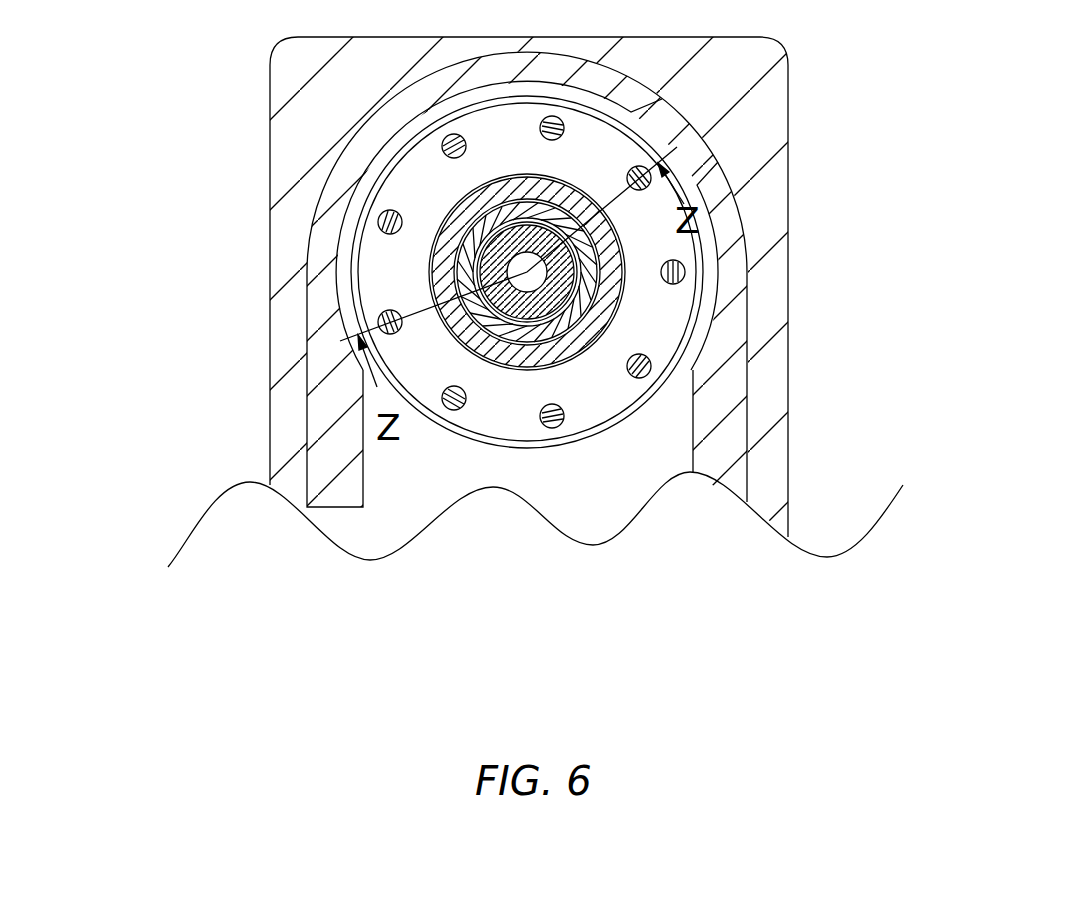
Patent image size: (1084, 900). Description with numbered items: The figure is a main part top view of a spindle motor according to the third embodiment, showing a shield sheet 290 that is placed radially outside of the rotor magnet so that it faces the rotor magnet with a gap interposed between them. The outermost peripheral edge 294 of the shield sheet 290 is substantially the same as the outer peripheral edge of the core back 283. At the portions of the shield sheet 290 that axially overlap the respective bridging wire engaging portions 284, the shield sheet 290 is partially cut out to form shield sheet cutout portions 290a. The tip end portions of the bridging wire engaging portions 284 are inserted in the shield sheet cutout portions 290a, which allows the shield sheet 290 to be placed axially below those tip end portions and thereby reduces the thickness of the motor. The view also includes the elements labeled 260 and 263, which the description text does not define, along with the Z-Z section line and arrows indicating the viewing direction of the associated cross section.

The housing 260 is at (243, 197).
The flange outer edge 263 is at (350, 255).
The core back 283 is at (706, 325).
The bridging wire engaging portions 284 is at (688, 271).
The shield sheet 290 is at (498, 423).
The shield sheet cutout portions 290a is at (655, 373).
The outermost peripheral edge 294 is at (358, 299).